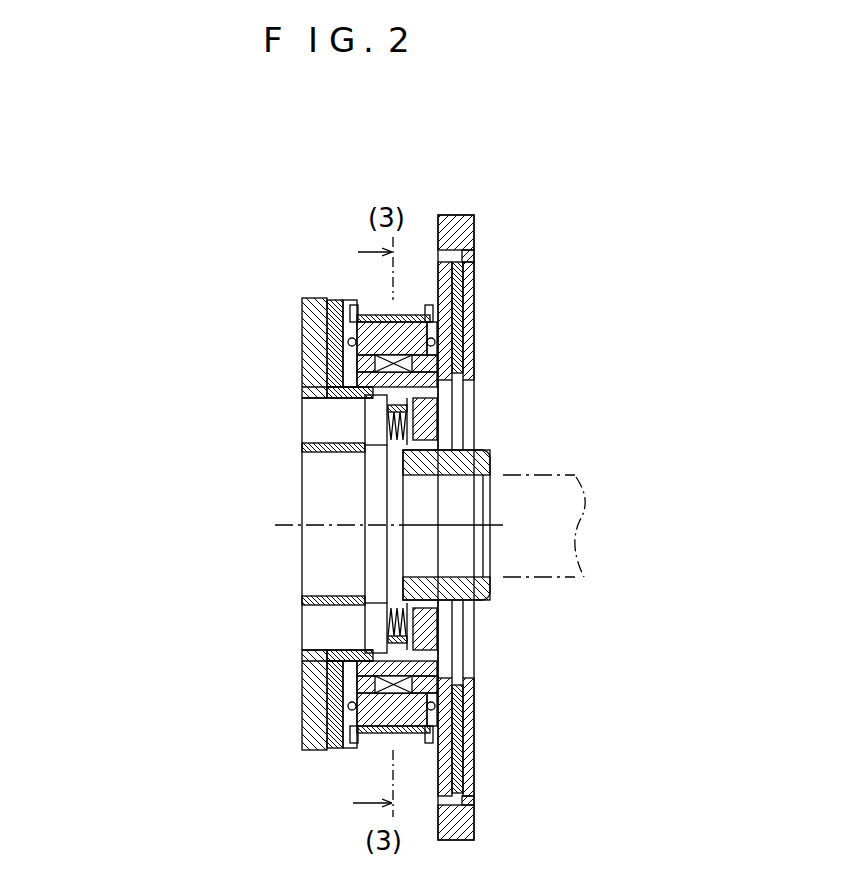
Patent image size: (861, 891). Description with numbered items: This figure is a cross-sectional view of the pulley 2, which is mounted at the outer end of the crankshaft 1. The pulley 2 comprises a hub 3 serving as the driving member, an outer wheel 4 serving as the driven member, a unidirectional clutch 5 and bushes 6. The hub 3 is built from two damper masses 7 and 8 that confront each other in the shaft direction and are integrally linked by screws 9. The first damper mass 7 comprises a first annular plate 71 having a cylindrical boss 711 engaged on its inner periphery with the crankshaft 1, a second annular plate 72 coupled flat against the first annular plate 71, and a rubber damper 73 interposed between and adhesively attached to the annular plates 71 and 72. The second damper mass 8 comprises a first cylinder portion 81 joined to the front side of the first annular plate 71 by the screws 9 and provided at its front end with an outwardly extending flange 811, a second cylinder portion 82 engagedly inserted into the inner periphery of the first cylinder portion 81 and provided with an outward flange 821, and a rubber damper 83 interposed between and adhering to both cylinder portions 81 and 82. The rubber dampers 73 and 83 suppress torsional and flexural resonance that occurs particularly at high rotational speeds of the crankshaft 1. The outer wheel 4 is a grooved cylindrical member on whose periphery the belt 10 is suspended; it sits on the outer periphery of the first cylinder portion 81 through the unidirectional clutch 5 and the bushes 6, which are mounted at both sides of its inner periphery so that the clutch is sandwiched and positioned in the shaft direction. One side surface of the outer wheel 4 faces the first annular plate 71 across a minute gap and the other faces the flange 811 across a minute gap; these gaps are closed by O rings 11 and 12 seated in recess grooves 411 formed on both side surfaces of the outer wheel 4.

The crankshaft 1 is at (570, 470).
The pulley 2 is at (283, 184).
The hub 3 is at (295, 375).
The outer wheel 4 is at (378, 316).
The unidirectional clutch 5 is at (360, 358).
The bushes 6 is at (348, 340).
The first damper mass 7 is at (524, 527).
The second damper mass 8 is at (175, 400).
The screws 9 is at (368, 430).
The belt 10 is at (367, 738).
The O ring 11 is at (437, 712).
The O ring 12 is at (345, 713).
The first annular plate 71 is at (458, 288).
The second annular plate 72 is at (468, 343).
The rubber damper 73 is at (568, 295).
The first cylinder portion 81 is at (335, 405).
The second cylinder portion 82 is at (330, 452).
The rubber damper 83 is at (330, 395).
The recess grooves 411 is at (442, 708).
The cylindrical boss 711 is at (487, 450).
The flange 811 is at (348, 323).
The flange 821 is at (333, 336).